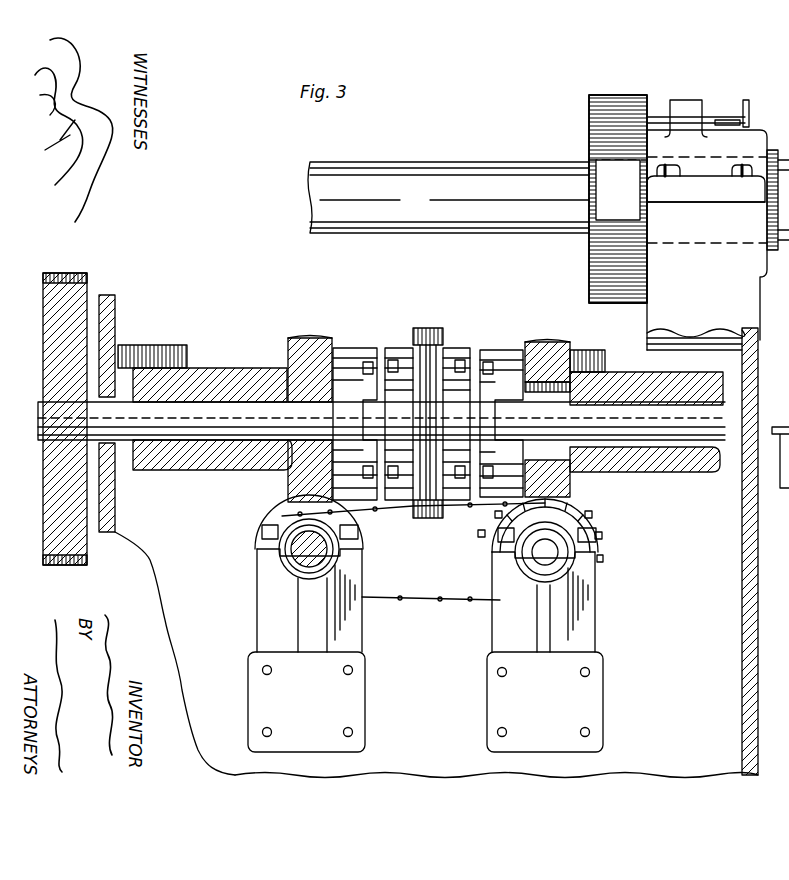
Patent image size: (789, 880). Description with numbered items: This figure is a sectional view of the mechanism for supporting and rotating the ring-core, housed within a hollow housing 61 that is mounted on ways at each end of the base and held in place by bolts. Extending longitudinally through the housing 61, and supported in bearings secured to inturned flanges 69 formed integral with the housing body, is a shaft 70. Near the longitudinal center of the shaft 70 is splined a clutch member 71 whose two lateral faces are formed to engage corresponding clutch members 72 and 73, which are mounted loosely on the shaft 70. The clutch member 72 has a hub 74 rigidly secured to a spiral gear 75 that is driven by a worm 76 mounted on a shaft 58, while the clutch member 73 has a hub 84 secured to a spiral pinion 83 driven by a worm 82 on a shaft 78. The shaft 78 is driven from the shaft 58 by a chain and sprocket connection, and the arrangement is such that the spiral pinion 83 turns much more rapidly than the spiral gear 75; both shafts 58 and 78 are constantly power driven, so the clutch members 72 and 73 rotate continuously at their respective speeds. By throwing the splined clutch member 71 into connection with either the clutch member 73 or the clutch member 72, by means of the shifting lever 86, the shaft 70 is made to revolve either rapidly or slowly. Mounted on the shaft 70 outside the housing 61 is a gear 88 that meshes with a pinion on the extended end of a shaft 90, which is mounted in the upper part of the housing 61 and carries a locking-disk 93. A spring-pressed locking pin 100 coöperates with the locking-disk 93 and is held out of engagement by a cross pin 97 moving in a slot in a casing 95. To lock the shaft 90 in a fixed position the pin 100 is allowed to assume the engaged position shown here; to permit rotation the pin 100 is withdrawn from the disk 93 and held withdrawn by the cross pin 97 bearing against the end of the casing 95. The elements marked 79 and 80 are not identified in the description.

The shaft 58 is at (300, 567).
The housing 61 is at (436, 553).
The inturned flanges 69 is at (213, 352).
The shaft 70 is at (680, 435).
The clutch member 71 is at (457, 350).
The clutch member 72 is at (349, 350).
The clutch member 73 is at (503, 350).
The hub 74 is at (285, 401).
The spiral gear 75 is at (298, 338).
The worm 76 is at (275, 516).
The shaft 78 is at (548, 558).
The belt 79 is at (345, 517).
The belt 80 is at (430, 600).
The worm 82 is at (562, 516).
The spiral pinion 83 is at (550, 345).
The hub 84 is at (562, 405).
The shifting lever 86 is at (423, 328).
The gear 88 is at (78, 290).
The shaft 90 is at (448, 197).
The locking-disk 93 is at (618, 199).
The casing 95 is at (712, 110).
The cross pin 97 is at (728, 118).
The locking pin 100 is at (752, 110).